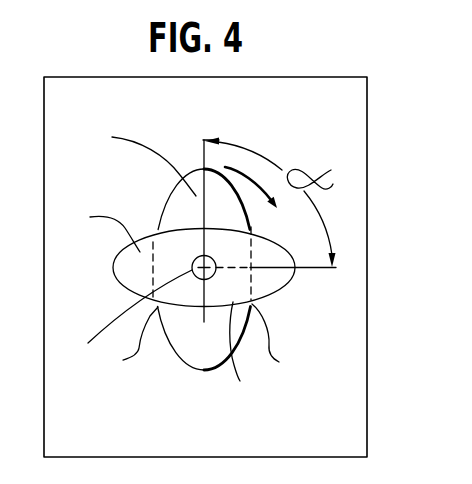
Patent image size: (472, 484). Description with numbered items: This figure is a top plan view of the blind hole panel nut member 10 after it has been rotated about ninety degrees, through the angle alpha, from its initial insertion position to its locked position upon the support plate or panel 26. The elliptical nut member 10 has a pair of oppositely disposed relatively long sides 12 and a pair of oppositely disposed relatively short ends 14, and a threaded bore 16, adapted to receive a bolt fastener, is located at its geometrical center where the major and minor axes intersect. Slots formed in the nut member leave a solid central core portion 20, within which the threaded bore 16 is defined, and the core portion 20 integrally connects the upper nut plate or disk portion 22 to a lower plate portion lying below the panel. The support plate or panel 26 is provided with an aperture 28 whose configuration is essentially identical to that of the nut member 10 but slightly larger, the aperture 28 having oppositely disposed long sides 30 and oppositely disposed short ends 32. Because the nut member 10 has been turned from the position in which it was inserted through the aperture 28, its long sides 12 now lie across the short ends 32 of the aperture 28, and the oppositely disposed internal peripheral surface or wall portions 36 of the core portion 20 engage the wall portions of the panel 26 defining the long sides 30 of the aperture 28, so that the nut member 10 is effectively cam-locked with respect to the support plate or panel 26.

The elliptical nut member 10 is at (313, 289).
The long sides 12 is at (188, 228).
The short ends 14 is at (112, 266).
The threaded bore 16 is at (127, 315).
The central core portion 20 is at (247, 344).
The upper nut plate or disk portion 22 is at (99, 229).
The support plate or panel 26 is at (318, 434).
The aperture 28 is at (139, 159).
The long sides of the aperture 30 is at (200, 344).
The short ends of the aperture 32 is at (198, 169).
The internal peripheral surface or wall portions 36 is at (150, 287).